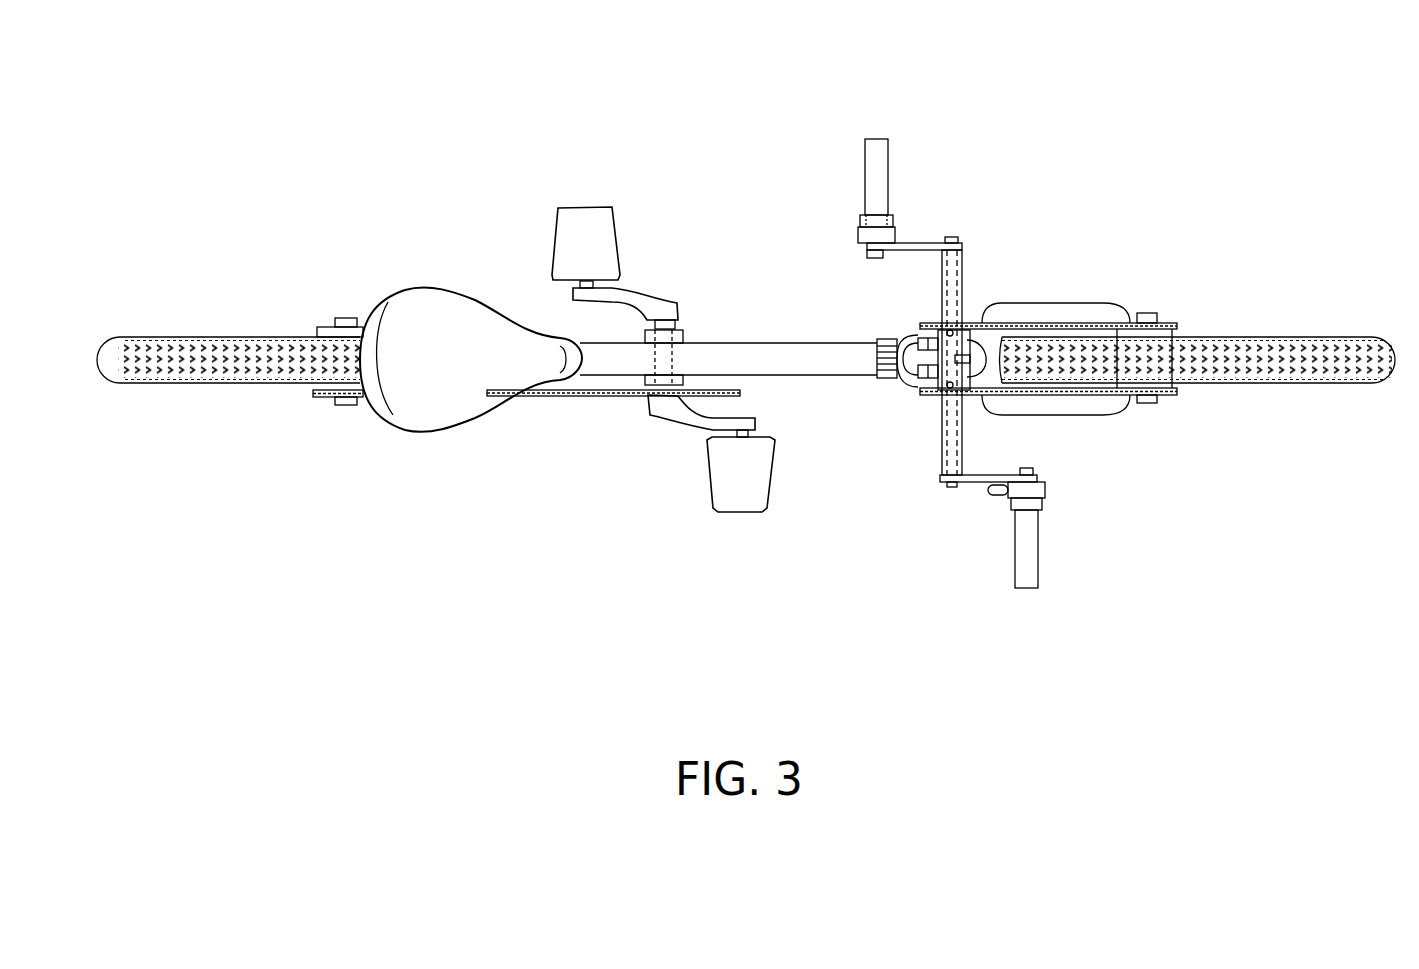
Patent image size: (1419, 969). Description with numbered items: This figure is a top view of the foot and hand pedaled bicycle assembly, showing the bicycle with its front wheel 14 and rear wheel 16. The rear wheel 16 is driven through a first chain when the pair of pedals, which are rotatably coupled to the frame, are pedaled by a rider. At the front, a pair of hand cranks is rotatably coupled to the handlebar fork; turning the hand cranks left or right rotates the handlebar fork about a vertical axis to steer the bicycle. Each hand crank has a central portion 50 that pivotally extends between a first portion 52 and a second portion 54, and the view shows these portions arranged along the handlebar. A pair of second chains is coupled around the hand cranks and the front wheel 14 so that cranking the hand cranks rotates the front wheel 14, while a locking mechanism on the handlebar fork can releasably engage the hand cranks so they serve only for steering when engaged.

The front wheel 14 is at (1292, 348).
The rear wheel 16 is at (250, 337).
The central portion 50 is at (920, 245).
The first portion 52 is at (963, 283).
The second portion 54 is at (875, 175).